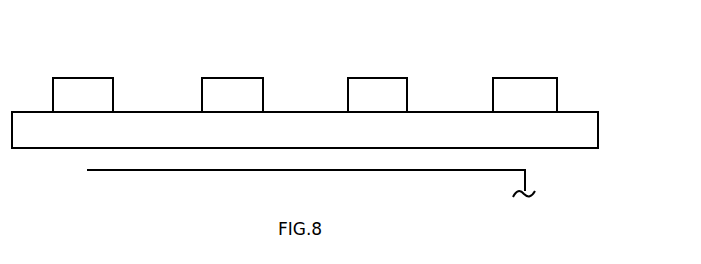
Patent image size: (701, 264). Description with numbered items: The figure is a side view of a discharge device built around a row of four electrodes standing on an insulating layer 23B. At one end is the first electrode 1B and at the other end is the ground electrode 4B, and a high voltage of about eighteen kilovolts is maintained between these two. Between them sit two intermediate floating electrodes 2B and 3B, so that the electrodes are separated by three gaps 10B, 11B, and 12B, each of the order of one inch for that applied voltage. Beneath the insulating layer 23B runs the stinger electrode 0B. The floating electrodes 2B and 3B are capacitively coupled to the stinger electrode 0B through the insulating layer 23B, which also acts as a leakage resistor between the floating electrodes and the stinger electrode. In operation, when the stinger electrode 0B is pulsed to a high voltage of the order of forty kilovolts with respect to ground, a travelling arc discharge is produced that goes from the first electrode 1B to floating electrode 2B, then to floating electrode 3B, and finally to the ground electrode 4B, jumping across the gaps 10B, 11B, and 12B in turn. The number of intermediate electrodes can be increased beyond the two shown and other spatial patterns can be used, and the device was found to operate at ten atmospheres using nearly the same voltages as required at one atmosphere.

The first electrode 1B is at (67, 78).
The floating electrode 2B is at (250, 78).
The floating electrode 3B is at (385, 78).
The ground electrode 4B is at (543, 77).
The gap 10B is at (160, 100).
The gap 11B is at (303, 92).
The gap 12B is at (442, 98).
The insulating layer 23B is at (577, 147).
The stinger electrode 0B is at (157, 171).